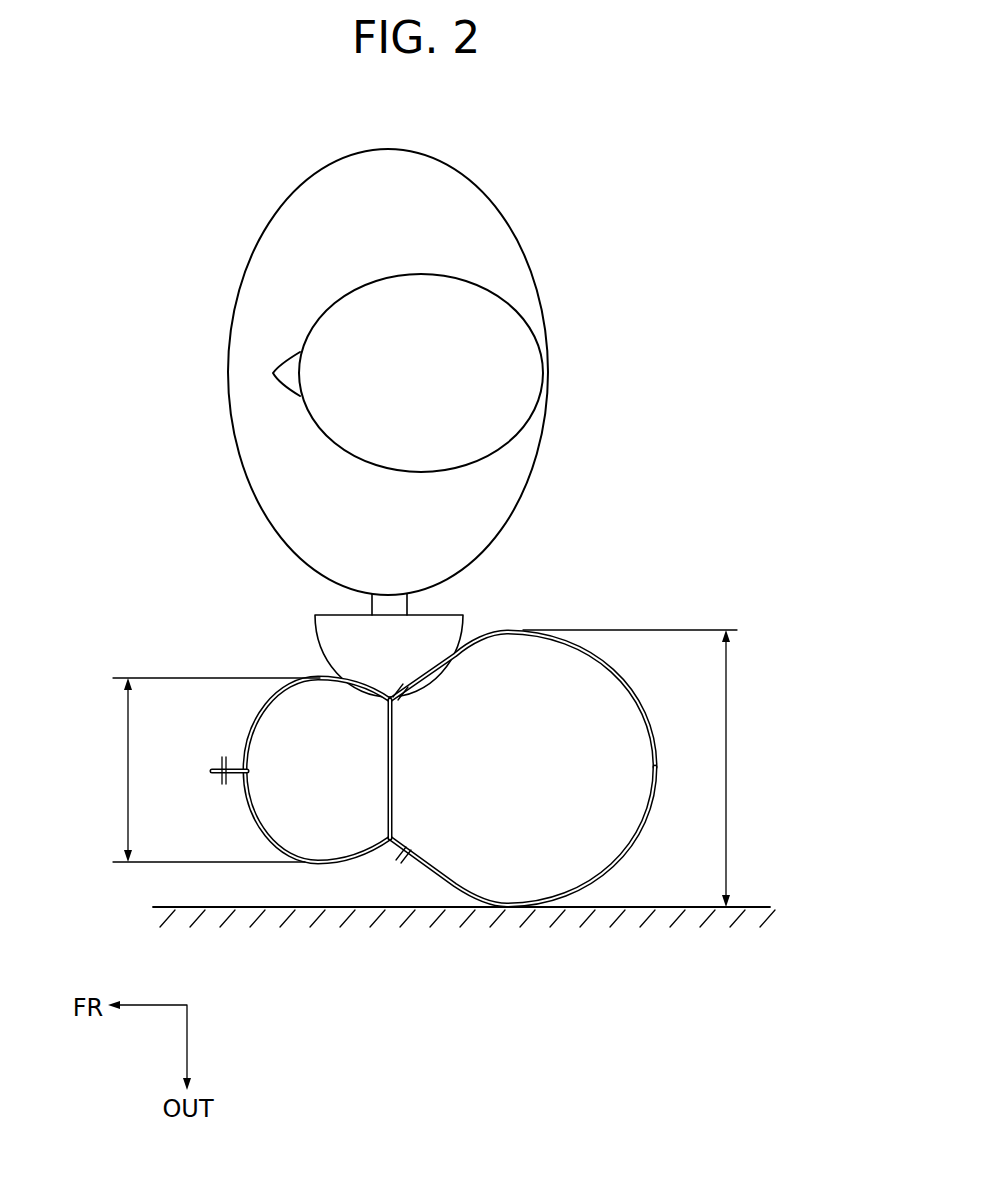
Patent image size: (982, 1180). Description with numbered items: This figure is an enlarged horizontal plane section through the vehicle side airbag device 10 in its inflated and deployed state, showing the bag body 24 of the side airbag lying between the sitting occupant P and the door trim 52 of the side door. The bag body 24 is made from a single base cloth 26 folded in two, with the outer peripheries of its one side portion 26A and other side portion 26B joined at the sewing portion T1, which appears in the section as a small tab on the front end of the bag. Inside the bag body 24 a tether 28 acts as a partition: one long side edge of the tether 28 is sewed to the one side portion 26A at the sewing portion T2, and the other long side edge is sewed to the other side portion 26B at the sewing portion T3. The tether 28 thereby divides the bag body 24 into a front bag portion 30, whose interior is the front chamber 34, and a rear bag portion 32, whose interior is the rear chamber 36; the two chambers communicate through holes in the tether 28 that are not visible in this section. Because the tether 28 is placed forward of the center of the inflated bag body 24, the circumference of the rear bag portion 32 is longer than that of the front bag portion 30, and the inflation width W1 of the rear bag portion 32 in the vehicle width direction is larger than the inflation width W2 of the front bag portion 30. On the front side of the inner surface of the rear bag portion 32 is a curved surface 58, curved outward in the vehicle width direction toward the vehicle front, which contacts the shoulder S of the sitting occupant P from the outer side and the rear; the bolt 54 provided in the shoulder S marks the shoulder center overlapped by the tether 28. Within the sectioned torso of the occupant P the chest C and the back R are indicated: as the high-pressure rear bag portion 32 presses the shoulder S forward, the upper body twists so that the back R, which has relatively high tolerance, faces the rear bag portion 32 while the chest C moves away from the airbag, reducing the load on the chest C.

The vehicle side airbag device 10 is at (627, 588).
The bag body 24 is at (415, 769).
The base cloth 26 is at (526, 774).
The one side portion 26A is at (563, 640).
The other side portion 26B is at (570, 906).
The tether 28 is at (398, 768).
The front bag portion 30 is at (274, 690).
The rear bag portion 32 is at (498, 632).
The front chamber 34 is at (278, 743).
The rear chamber 36 is at (526, 769).
The door trim 52 is at (668, 905).
The bolt 54 is at (392, 605).
The curved surface 58 is at (424, 676).
The sitting occupant P is at (301, 180).
The chest C is at (228, 381).
The back R is at (545, 388).
The shoulder S is at (315, 630).
The sewing portion T1 is at (222, 782).
The sewing portion T2 is at (408, 693).
The sewing portion T3 is at (410, 842).
The inflation width of the rear bag portion W1 is at (728, 770).
The inflation width of the front bag portion W2 is at (126, 773).